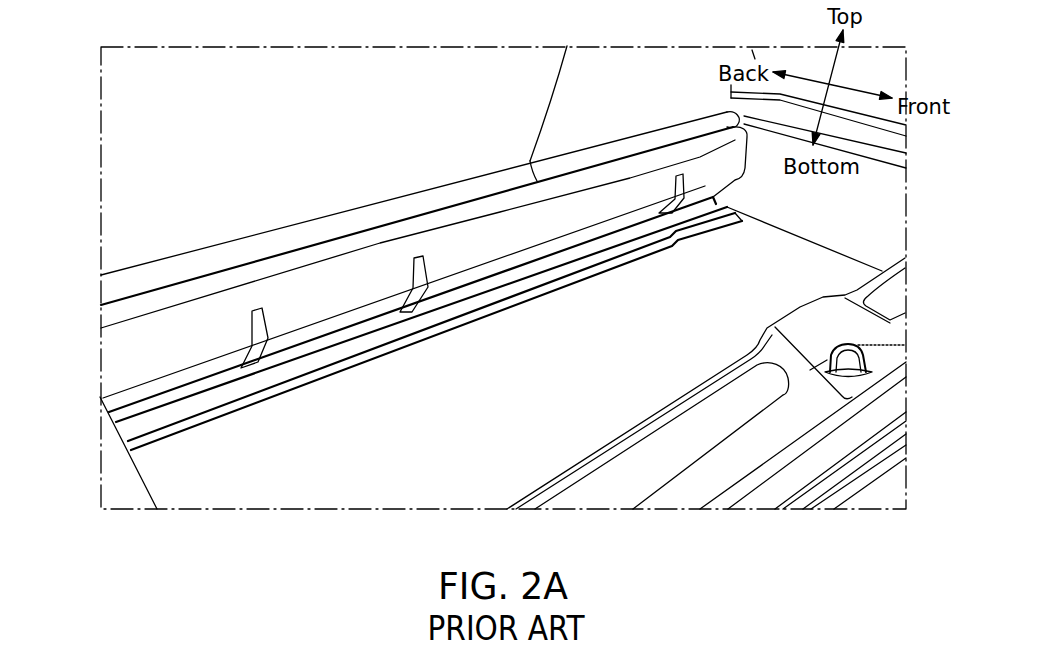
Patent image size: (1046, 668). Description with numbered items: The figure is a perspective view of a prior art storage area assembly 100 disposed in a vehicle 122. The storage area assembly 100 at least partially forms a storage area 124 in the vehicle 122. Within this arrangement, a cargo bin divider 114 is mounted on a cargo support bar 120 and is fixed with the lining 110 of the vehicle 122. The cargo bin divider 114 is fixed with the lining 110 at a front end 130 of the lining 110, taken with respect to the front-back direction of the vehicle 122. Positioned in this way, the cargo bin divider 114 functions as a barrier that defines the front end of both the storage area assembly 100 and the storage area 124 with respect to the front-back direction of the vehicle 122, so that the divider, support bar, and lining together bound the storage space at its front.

The storage area assembly 100 is at (220, 212).
The lining 110 is at (800, 270).
The cargo bin divider 114 is at (145, 355).
The cargo support bar 120 is at (140, 452).
The vehicle 122 is at (820, 192).
The storage area 124 is at (433, 427).
The front end 130 is at (140, 455).